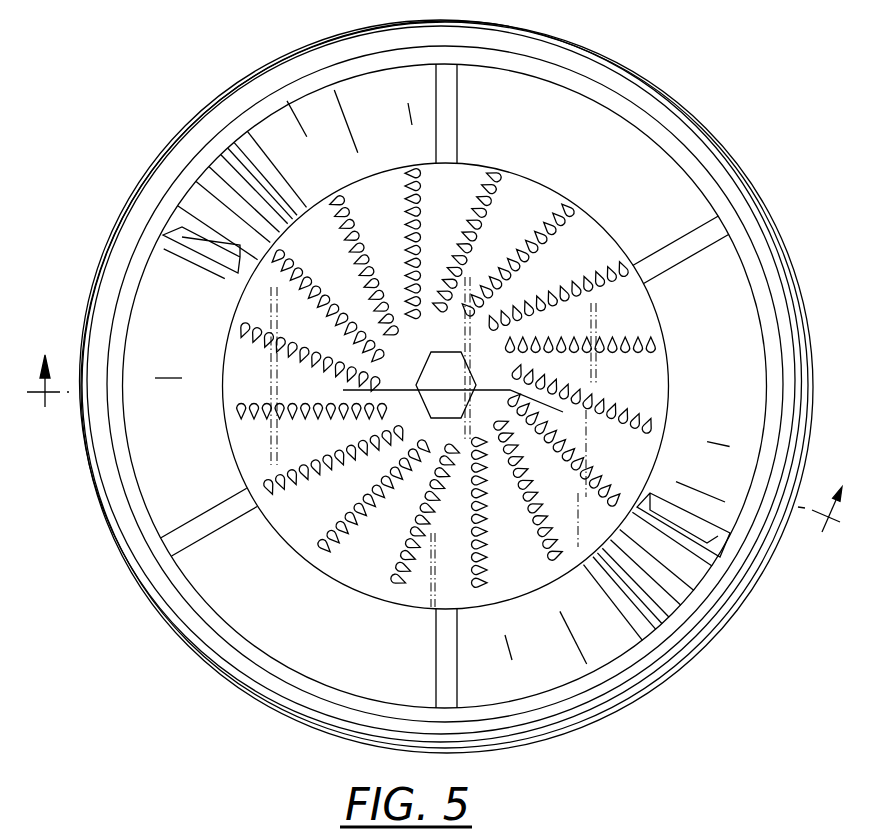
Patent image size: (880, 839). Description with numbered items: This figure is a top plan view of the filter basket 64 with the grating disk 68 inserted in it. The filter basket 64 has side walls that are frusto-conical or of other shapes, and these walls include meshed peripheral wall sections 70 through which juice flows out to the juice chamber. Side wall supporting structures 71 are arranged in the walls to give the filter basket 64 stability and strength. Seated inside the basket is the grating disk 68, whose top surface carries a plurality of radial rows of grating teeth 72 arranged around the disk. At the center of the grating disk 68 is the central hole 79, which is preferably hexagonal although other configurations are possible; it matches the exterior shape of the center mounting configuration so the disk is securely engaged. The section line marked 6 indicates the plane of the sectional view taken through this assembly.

The filter basket 64 is at (646, 76).
The grating disk 68 is at (325, 514).
The meshed peripheral wall sections 70 is at (332, 188).
The side wall supporting structures 71 is at (667, 254).
The grating teeth 72 is at (487, 217).
The central hole 79 is at (474, 366).
The section line 6- 6 is at (434, 455).